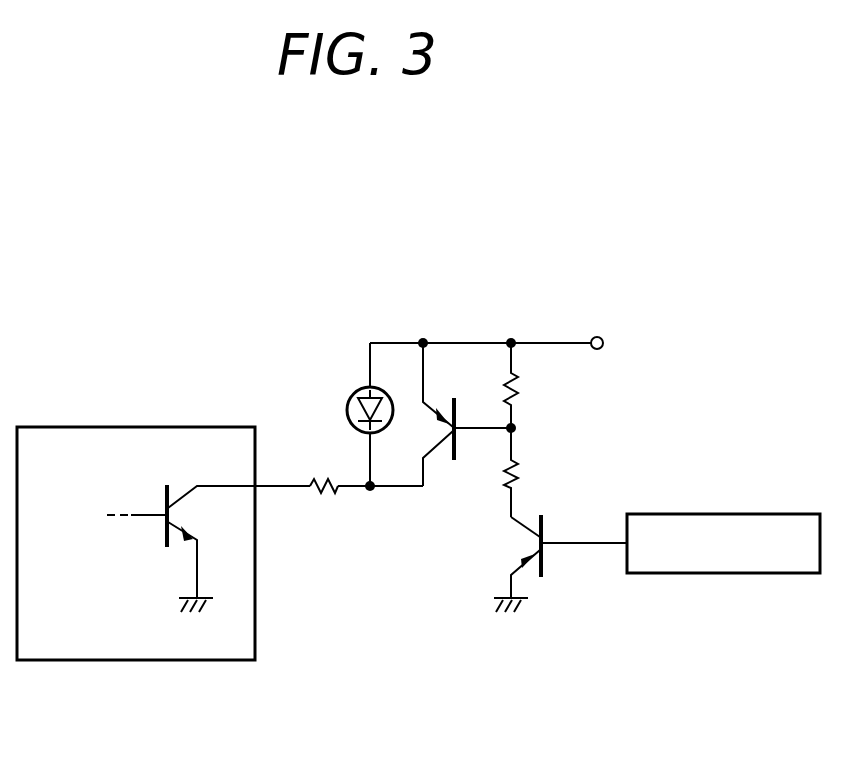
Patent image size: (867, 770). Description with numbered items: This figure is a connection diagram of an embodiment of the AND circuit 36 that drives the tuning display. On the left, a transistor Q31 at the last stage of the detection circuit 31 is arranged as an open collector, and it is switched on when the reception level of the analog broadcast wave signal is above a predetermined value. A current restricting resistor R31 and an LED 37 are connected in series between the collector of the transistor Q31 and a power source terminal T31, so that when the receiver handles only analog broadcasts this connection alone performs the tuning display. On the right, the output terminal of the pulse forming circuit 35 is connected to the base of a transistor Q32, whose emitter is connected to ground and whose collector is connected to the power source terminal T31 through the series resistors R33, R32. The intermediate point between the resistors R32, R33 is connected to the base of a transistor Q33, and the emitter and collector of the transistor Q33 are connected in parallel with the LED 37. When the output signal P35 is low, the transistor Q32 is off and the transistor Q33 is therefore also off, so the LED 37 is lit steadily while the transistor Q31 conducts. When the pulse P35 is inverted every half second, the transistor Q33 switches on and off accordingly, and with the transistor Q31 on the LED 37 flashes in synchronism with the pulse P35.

The detection circuit 31 is at (190, 661).
The transistor Q31 is at (165, 528).
The AND circuit 36 is at (426, 632).
The LED 37 is at (346, 410).
The current restricting resistor R31 is at (322, 494).
The transistor Q33 is at (457, 440).
The resistor R32 is at (520, 386).
The resistor R33 is at (520, 476).
The transistor Q32 is at (546, 565).
The power source terminal T31 is at (601, 350).
The output signal P35 is at (600, 543).
The pulse forming circuit 35 is at (720, 574).